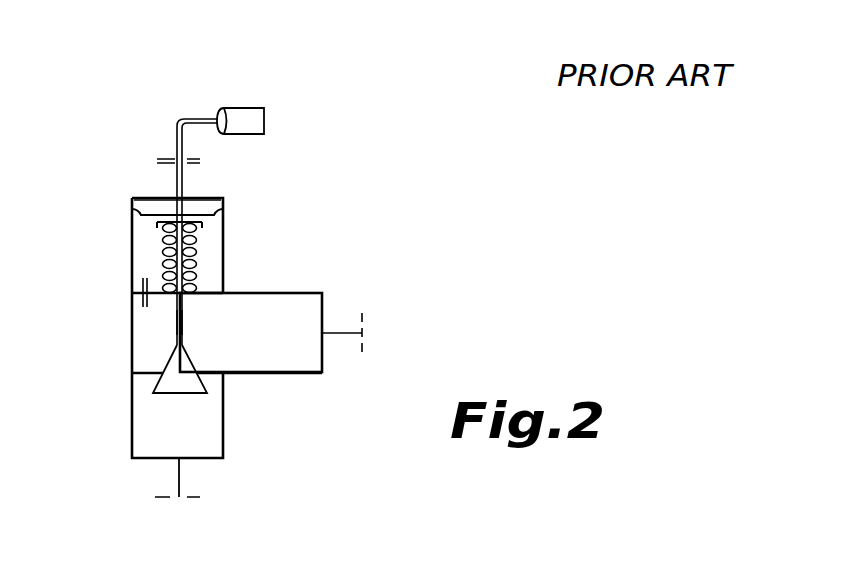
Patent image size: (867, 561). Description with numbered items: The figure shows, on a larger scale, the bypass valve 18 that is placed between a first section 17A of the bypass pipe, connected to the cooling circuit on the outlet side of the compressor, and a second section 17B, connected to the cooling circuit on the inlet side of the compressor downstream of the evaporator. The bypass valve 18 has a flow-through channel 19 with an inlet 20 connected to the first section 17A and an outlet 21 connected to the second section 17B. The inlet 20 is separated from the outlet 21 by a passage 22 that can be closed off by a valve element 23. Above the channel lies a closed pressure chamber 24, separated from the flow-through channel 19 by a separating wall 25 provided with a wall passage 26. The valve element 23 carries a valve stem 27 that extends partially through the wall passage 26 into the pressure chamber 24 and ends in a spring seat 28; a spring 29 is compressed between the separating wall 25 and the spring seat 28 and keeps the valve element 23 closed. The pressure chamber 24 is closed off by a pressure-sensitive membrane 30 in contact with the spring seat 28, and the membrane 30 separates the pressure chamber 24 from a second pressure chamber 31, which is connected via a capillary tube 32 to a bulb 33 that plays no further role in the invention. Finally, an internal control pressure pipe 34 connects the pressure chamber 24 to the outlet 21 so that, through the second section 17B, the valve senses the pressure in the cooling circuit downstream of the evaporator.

The first section of the bypass pipe 17A is at (179, 474).
The second section of the bypass pipe 17B is at (340, 333).
The bypass valve 18 is at (435, 155).
The flow-through channel 19 is at (243, 361).
The inlet 20 is at (207, 460).
The outlet 21 is at (323, 308).
The passage 22 is at (163, 372).
The valve element 23 is at (175, 387).
The pressure chamber 24 is at (140, 265).
The separating wall 25 is at (215, 290).
The wall passage 26 is at (177, 297).
The valve stem 27 is at (177, 320).
The spring seat 28 is at (200, 222).
The spring 29 is at (190, 263).
The membrane 30 is at (147, 212).
The second pressure chamber 31 is at (205, 203).
The capillary tube 32 is at (178, 143).
The bulb 33 is at (278, 120).
The control pressure pipe 34 is at (143, 283).